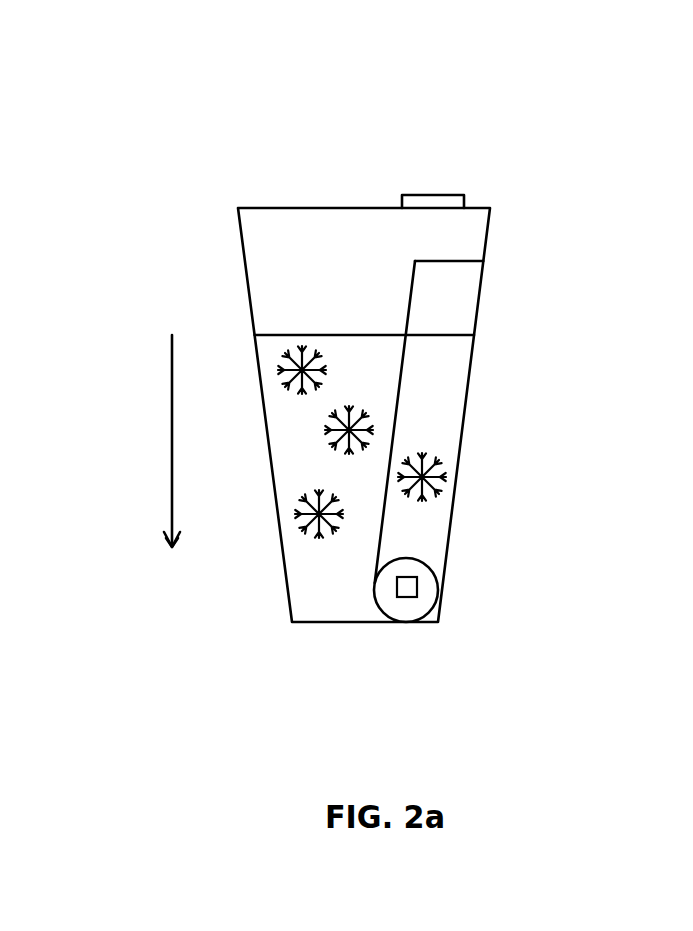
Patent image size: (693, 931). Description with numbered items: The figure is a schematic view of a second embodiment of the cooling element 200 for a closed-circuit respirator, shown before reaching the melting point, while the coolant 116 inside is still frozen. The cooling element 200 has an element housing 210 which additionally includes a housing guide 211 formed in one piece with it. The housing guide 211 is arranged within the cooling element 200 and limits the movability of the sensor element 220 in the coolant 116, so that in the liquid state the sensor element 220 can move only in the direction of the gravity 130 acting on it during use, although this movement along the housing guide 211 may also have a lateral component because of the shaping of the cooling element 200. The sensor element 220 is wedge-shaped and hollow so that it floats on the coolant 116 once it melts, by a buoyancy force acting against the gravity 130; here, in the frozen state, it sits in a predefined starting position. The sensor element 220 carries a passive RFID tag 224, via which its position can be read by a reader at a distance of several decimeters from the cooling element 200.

The cooling element 200 is at (593, 155).
The gravity 130 is at (172, 425).
The housing guide 211 is at (417, 289).
The coolant 116 is at (437, 363).
The element housing 210 is at (458, 450).
The sensor element 220 is at (417, 570).
The passive RFID tag 224 is at (407, 592).